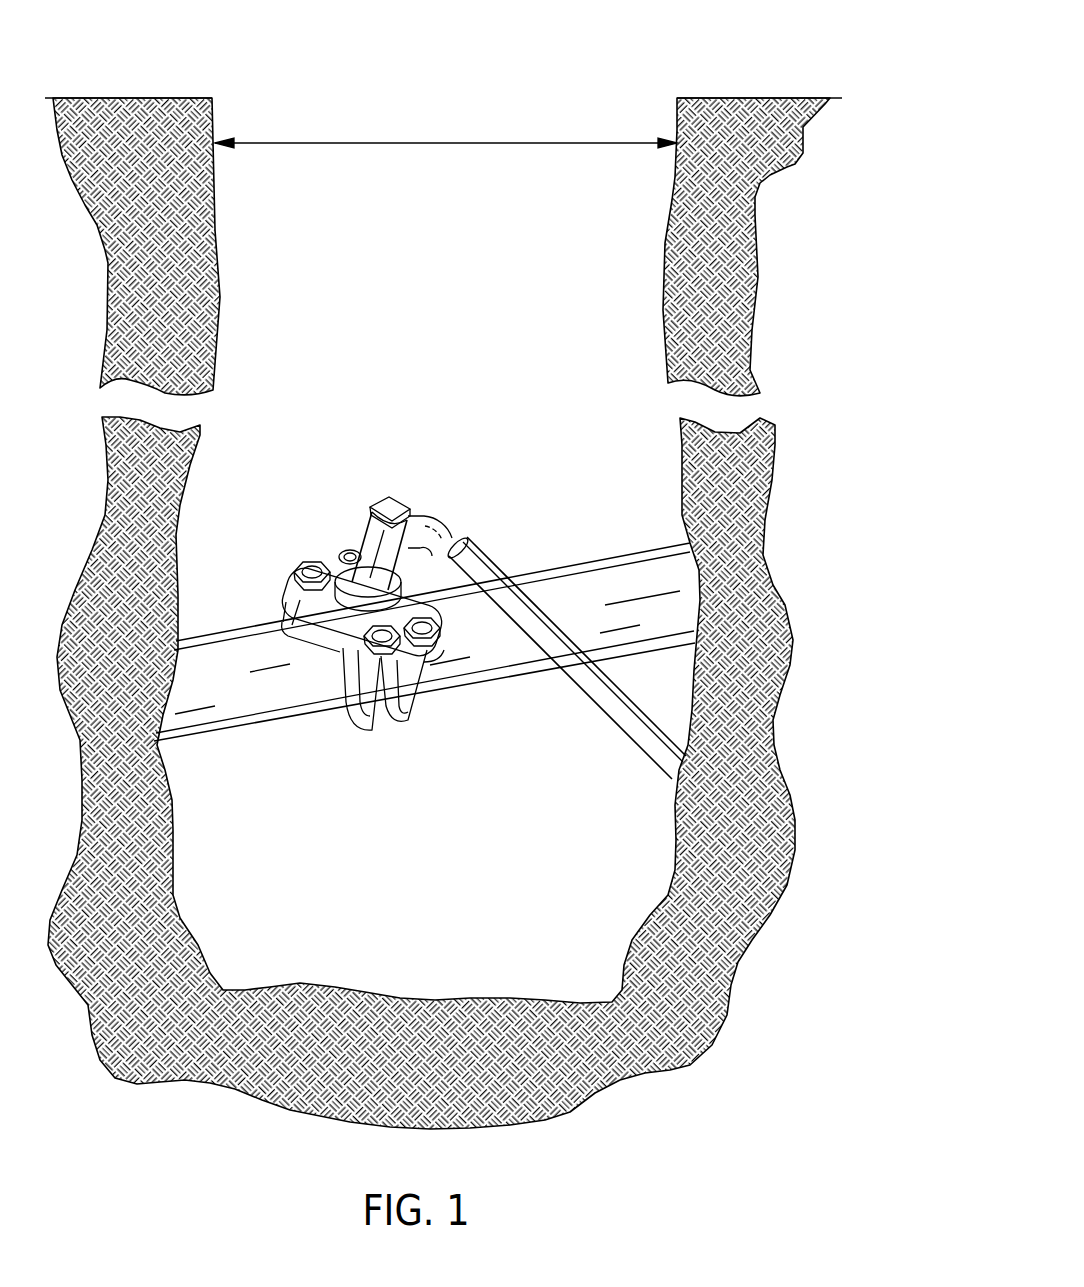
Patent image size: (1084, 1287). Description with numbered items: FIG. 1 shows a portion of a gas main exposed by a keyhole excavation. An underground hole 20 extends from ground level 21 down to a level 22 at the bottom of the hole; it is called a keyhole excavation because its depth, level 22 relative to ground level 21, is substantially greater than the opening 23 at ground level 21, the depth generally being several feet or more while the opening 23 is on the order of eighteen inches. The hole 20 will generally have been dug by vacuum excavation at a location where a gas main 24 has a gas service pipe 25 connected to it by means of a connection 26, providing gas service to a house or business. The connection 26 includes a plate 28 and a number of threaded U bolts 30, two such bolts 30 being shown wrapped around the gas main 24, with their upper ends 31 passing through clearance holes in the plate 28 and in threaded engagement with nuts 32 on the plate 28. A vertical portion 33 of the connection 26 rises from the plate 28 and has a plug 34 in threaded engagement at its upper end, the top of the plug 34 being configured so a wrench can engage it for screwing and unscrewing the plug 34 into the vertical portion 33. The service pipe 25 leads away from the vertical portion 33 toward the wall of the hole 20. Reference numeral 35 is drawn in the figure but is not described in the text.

The underground hole 20 is at (458, 293).
The ground level 21 is at (712, 97).
The level at the bottom of the hole 22 is at (437, 998).
The opening at ground level 23 is at (443, 142).
The gas main 24 is at (626, 556).
The gas service pipe 25 is at (490, 552).
The connection 26 is at (408, 547).
The plate 28 is at (345, 715).
The threaded U bolts 30 is at (405, 714).
The upper ends of the U bolts 31 is at (302, 562).
The nuts 32 is at (440, 638).
The vertical portion 33 is at (367, 512).
The plug 34 is at (412, 518).
The stem 35 is at (392, 500).